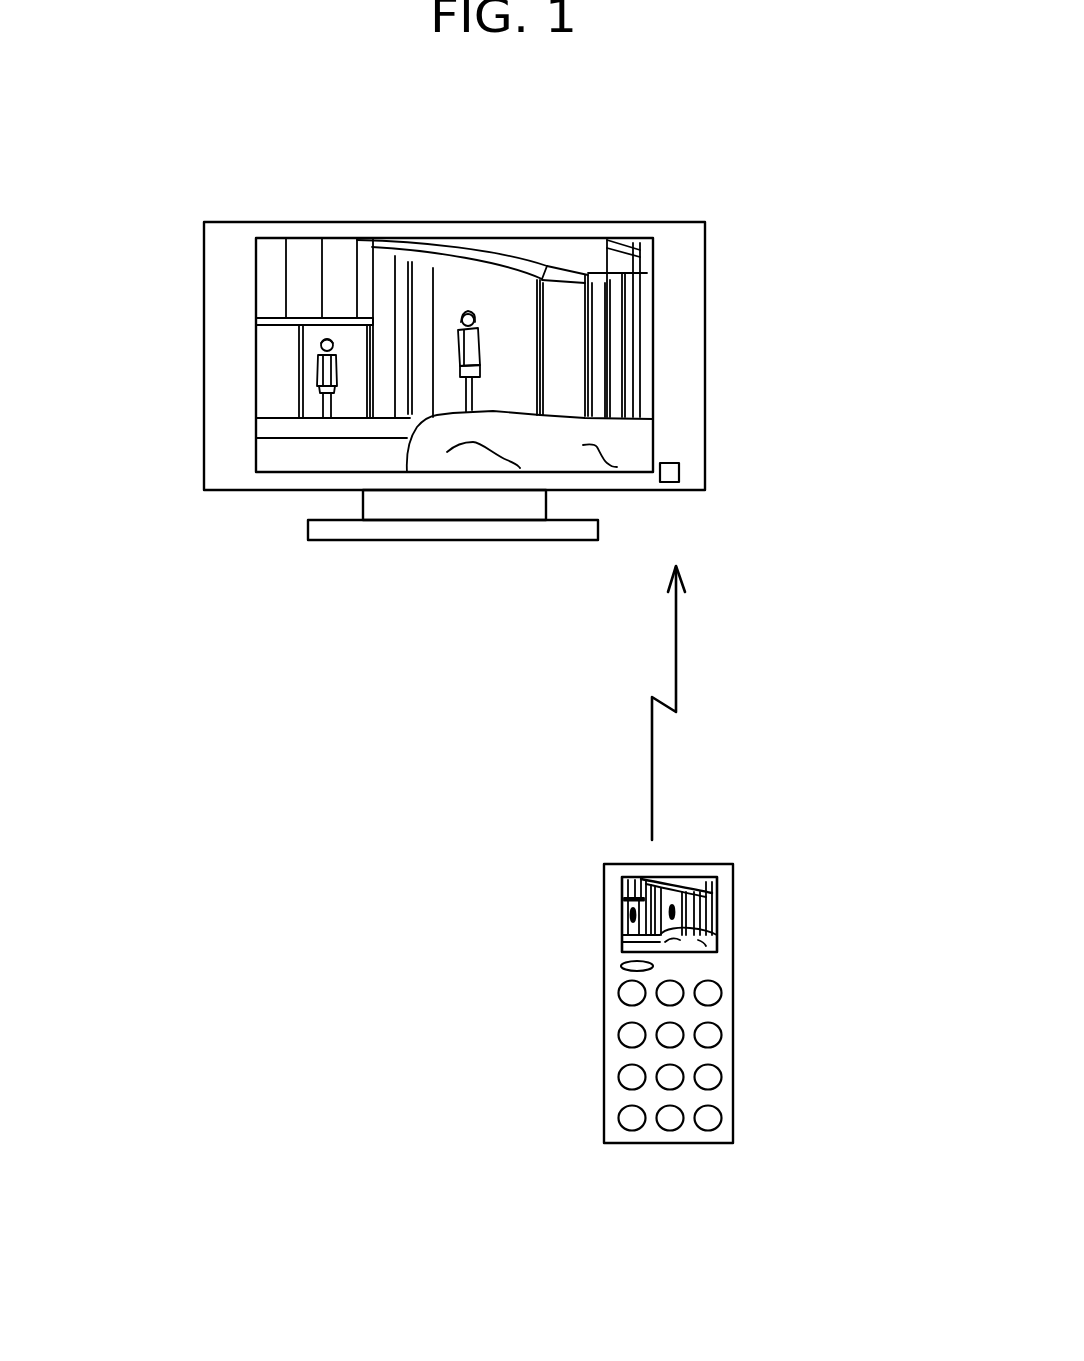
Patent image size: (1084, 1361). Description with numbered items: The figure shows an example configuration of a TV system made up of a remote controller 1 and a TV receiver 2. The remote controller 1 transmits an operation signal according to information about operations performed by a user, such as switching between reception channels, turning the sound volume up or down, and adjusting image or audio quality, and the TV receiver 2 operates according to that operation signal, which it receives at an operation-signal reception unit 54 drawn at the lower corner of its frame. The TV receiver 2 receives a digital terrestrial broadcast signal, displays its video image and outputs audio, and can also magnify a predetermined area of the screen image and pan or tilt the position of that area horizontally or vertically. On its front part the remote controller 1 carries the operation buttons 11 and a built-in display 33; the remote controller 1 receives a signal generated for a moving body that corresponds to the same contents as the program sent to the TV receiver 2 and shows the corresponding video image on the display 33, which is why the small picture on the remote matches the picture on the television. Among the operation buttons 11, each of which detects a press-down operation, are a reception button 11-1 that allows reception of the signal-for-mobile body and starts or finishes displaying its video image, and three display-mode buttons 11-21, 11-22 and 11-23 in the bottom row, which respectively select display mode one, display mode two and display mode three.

The remote controller 1 is at (640, 1097).
The TV receiver 2 is at (456, 222).
The operation buttons 11 is at (639, 1128).
The reception button 11-1 is at (621, 965).
The display-mode button 11-21 is at (619, 1115).
The display-mode button 11-22 is at (668, 1130).
The display-mode button 11-23 is at (707, 1130).
The display 33 is at (718, 904).
The operation-signal reception unit 54 is at (680, 472).